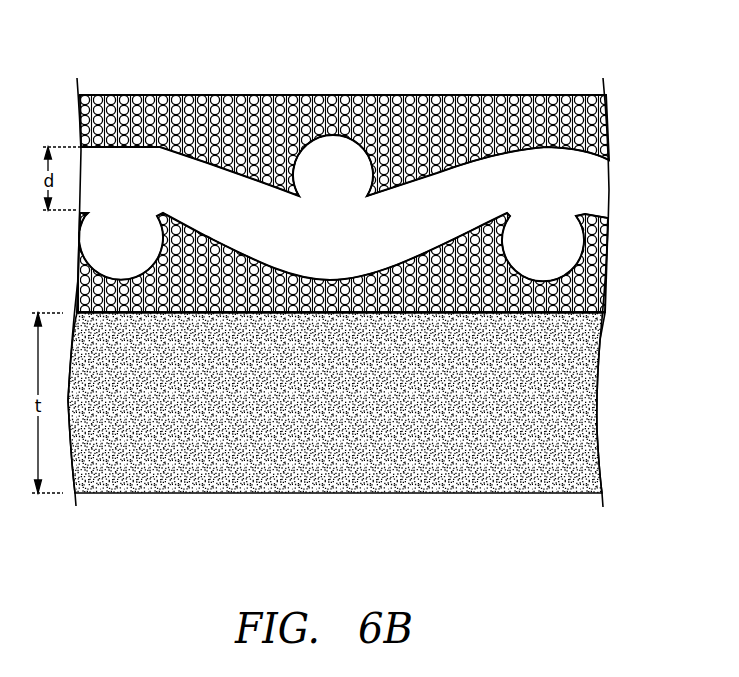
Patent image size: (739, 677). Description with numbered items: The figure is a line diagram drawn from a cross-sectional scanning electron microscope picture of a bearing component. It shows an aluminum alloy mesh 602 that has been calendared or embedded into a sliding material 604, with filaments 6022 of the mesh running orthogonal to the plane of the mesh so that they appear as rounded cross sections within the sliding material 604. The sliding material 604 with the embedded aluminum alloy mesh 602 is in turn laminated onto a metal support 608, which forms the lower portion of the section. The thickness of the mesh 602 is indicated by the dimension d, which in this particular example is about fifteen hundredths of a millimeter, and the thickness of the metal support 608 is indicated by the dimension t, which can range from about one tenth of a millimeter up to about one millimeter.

The aluminum alloy mesh 602 is at (592, 198).
The filaments 6022 is at (339, 162).
The sliding material 604 is at (587, 123).
The metal support 608 is at (577, 402).